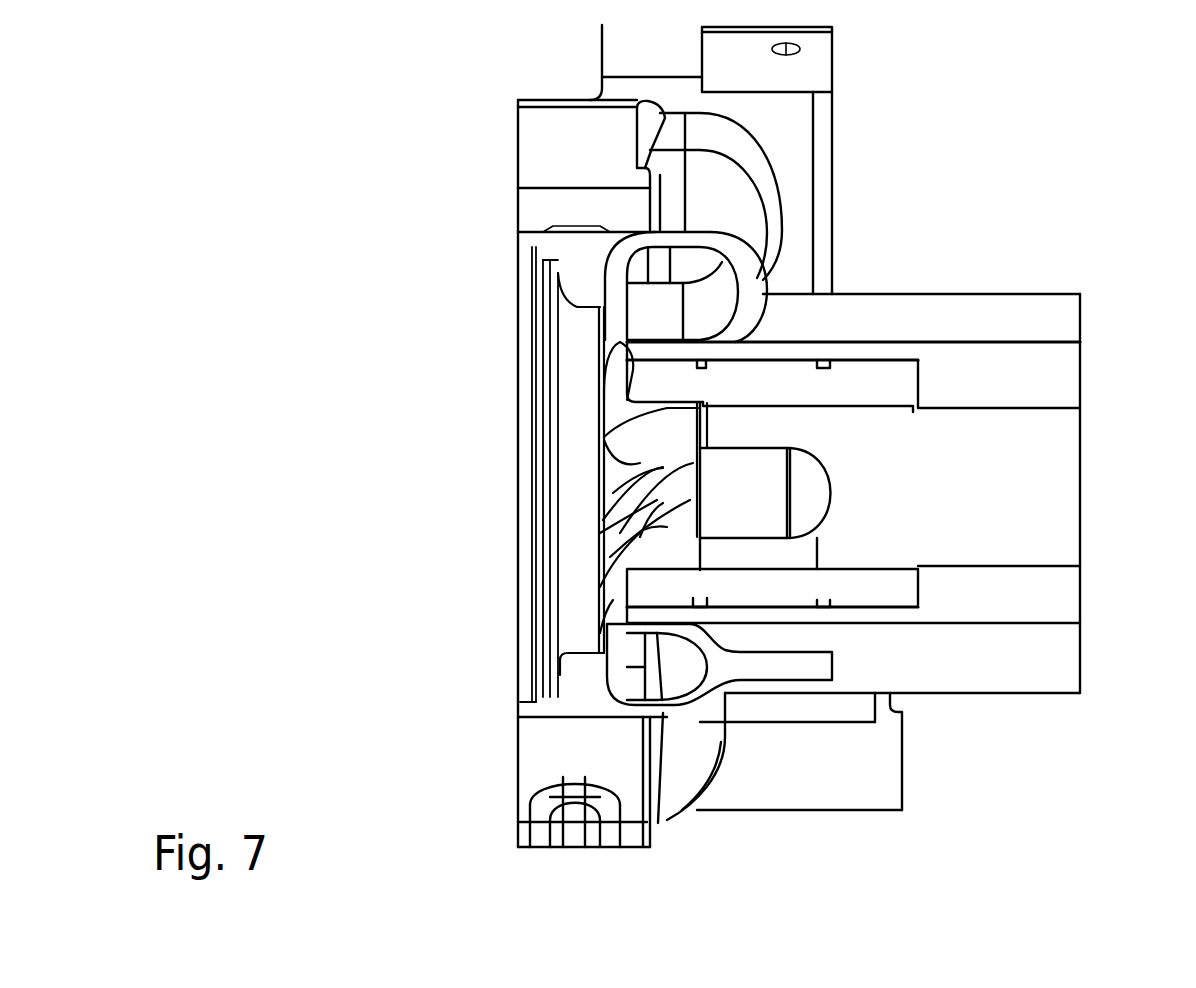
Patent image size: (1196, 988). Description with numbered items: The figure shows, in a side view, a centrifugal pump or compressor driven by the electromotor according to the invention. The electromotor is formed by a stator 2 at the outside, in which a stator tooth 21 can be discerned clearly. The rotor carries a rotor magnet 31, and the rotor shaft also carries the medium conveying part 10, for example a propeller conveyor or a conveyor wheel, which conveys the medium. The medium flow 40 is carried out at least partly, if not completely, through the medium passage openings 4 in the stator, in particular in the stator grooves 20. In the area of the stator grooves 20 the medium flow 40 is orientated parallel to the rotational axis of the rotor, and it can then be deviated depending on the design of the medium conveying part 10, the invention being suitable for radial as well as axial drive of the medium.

The stator 2 is at (757, 580).
The medium passage opening 4 is at (703, 410).
The medium conveying part 10 is at (618, 441).
The stator grooves 20 is at (742, 417).
The stator tooth 21 is at (793, 555).
The rotor magnet 31 is at (757, 478).
The medium flow 40 is at (817, 430).